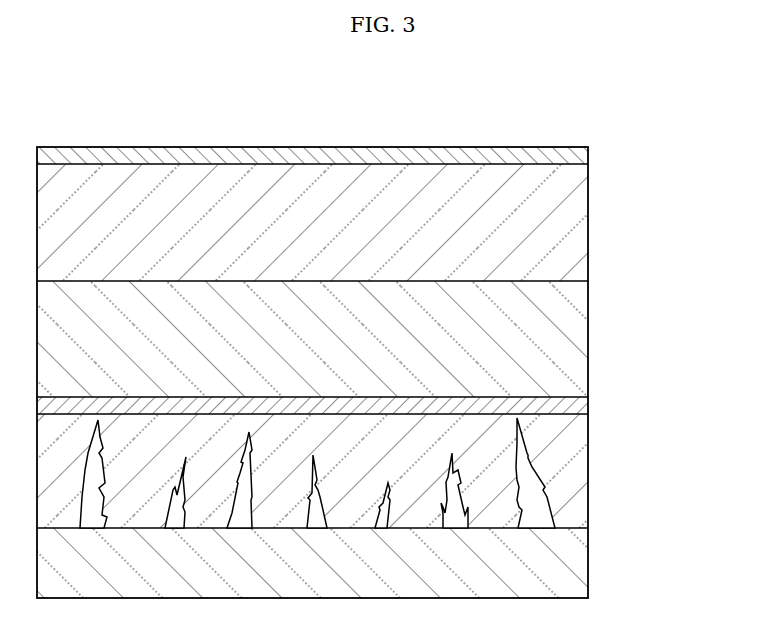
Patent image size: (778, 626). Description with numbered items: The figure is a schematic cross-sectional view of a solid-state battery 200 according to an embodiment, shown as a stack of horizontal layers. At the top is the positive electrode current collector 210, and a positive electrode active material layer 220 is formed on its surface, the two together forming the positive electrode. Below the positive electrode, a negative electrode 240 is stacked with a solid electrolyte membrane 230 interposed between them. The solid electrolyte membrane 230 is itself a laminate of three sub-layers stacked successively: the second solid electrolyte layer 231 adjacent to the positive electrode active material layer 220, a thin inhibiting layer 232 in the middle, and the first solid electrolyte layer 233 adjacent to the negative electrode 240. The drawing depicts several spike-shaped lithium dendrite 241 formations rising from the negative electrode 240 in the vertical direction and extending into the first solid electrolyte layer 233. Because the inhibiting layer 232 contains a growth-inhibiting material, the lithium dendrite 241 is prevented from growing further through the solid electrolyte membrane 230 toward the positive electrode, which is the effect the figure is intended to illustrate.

The solid-state battery 200 is at (122, 97).
The positive electrode current collector 210 is at (588, 157).
The positive electrode active material layer 220 is at (588, 225).
The solid electrolyte membrane 230 is at (388, 404).
The second solid electrolyte layer 231 is at (588, 335).
The inhibiting layer 232 is at (588, 407).
The first solid electrolyte layer 233 is at (588, 445).
The negative electrode 240 is at (588, 565).
The lithium dendrite 241 is at (533, 483).